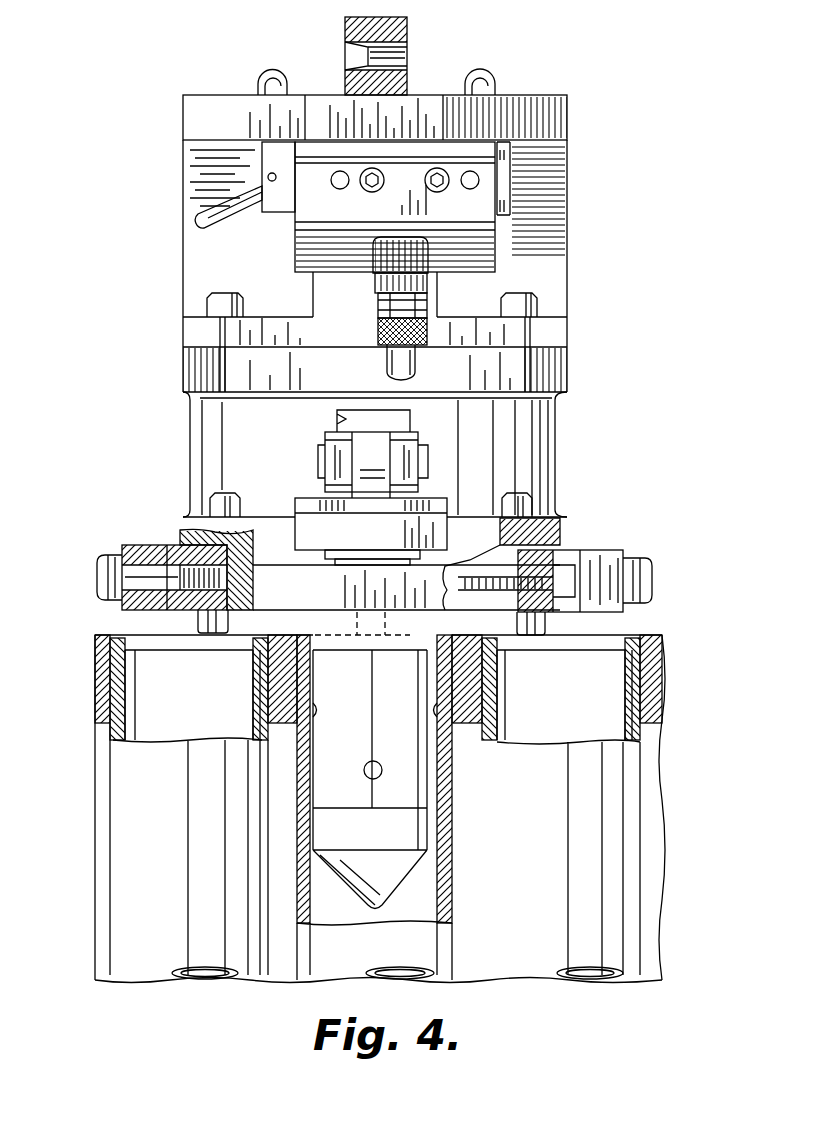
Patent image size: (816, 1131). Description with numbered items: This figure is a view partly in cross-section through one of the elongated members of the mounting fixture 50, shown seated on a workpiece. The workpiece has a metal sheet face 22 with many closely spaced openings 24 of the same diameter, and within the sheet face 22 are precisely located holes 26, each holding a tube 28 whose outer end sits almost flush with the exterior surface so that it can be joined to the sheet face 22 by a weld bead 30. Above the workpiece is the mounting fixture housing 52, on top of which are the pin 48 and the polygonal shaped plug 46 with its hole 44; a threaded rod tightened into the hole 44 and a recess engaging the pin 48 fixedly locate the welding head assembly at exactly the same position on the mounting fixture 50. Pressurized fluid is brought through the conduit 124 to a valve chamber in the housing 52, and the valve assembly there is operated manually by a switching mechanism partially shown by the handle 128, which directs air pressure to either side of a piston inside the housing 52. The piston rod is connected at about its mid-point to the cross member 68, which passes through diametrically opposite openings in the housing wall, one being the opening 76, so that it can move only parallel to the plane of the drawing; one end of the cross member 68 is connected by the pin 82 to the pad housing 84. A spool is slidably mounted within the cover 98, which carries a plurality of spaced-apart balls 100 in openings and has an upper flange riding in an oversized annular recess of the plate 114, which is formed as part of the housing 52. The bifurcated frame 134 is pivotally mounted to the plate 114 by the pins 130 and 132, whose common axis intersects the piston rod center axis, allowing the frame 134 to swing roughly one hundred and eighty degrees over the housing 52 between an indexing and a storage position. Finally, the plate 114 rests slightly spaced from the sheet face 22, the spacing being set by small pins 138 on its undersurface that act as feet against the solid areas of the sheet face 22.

The sheet face 22 is at (651, 698).
The openings 24 is at (112, 706).
The holes 26 is at (108, 683).
The tube 28 is at (152, 963).
The weld bead 30 is at (125, 633).
The hole 44 is at (357, 47).
The polygonal shaped plug 46 is at (408, 30).
The pin 48 is at (485, 72).
The mounting fixture 50 is at (610, 410).
The mounting fixture housing 52 is at (553, 125).
The cross member 68 is at (372, 465).
The opening 76 is at (337, 413).
The pin 82 is at (325, 462).
The pad housing 84 is at (440, 505).
The cover 98 is at (428, 795).
The balls 100 is at (382, 771).
The plate 114 is at (318, 596).
The conduit 124 is at (390, 368).
The handle 128 is at (192, 214).
The pin 130 is at (652, 570).
The pin 132 is at (97, 565).
The bifurcated frame 134 is at (160, 552).
The pins 138 is at (217, 633).